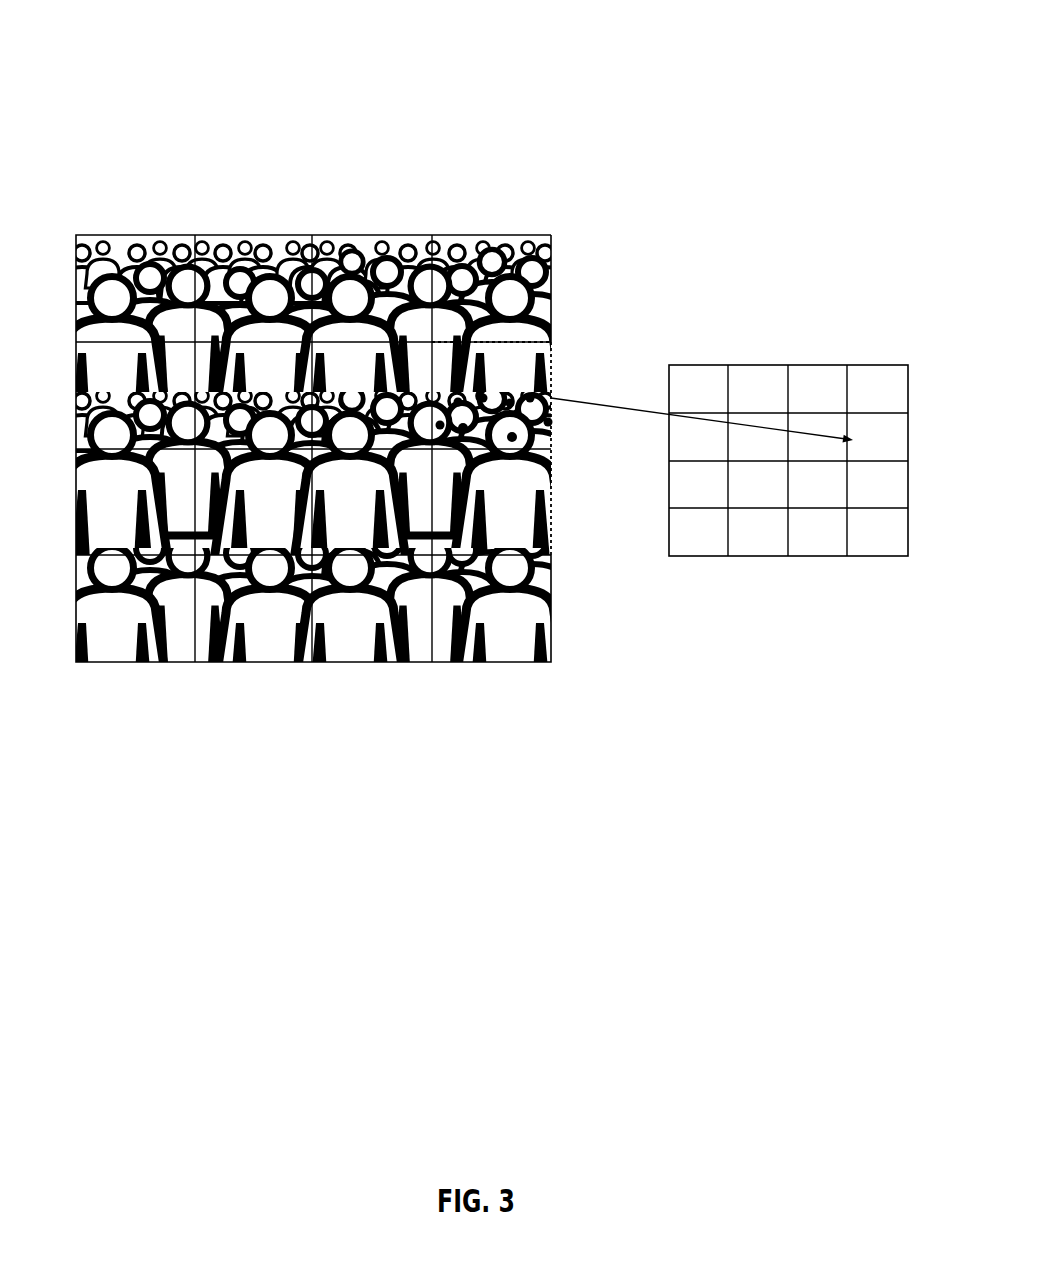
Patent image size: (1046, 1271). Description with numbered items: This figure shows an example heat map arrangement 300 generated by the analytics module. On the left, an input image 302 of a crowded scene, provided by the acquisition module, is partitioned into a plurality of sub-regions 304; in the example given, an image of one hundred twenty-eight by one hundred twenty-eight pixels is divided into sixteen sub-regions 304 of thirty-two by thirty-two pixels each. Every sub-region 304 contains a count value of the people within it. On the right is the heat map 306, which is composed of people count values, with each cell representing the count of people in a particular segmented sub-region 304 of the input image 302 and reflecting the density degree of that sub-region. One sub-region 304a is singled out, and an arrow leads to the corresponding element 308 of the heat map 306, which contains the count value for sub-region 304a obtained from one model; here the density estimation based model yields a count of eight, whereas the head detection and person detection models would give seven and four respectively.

The crowd counting process 300 is at (84, 86).
The input image 302 is at (446, 234).
The sub-region 304 is at (113, 232).
The sub-region 304a is at (553, 418).
The heat map 306 is at (750, 384).
The element of the heat map 308 is at (910, 437).